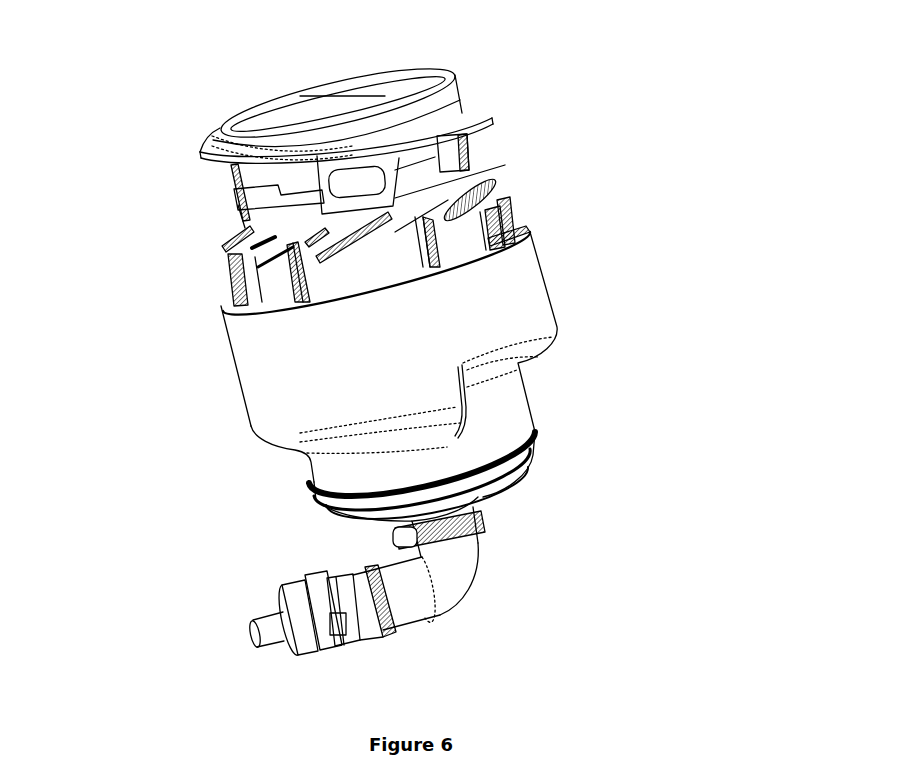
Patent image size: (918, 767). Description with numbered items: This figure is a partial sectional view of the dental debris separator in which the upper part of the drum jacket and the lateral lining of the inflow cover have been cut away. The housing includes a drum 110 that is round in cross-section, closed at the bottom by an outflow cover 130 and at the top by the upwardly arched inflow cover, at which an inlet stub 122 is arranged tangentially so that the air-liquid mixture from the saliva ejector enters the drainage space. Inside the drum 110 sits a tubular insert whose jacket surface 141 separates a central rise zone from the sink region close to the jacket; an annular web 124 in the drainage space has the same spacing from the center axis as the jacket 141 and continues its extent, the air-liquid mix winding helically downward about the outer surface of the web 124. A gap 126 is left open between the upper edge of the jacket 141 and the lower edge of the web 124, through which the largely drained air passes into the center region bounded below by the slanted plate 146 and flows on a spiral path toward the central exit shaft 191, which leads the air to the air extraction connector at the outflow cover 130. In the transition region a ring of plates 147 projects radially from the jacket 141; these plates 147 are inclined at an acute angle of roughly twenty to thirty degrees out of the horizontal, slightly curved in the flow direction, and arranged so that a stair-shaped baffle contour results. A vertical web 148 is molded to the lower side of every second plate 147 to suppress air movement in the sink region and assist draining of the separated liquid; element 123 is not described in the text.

The drum 110 is at (552, 307).
The inlet stub 122 is at (397, 63).
The flange 123 is at (203, 160).
The annular web 124 is at (260, 178).
The gap 126 is at (412, 188).
The outflow cover 130 is at (473, 497).
The jacket surface 141 is at (380, 267).
The slanted plate 146 is at (432, 170).
The plates 147 is at (477, 183).
The vertical web 148 is at (233, 287).
The exit shaft 191 is at (358, 173).